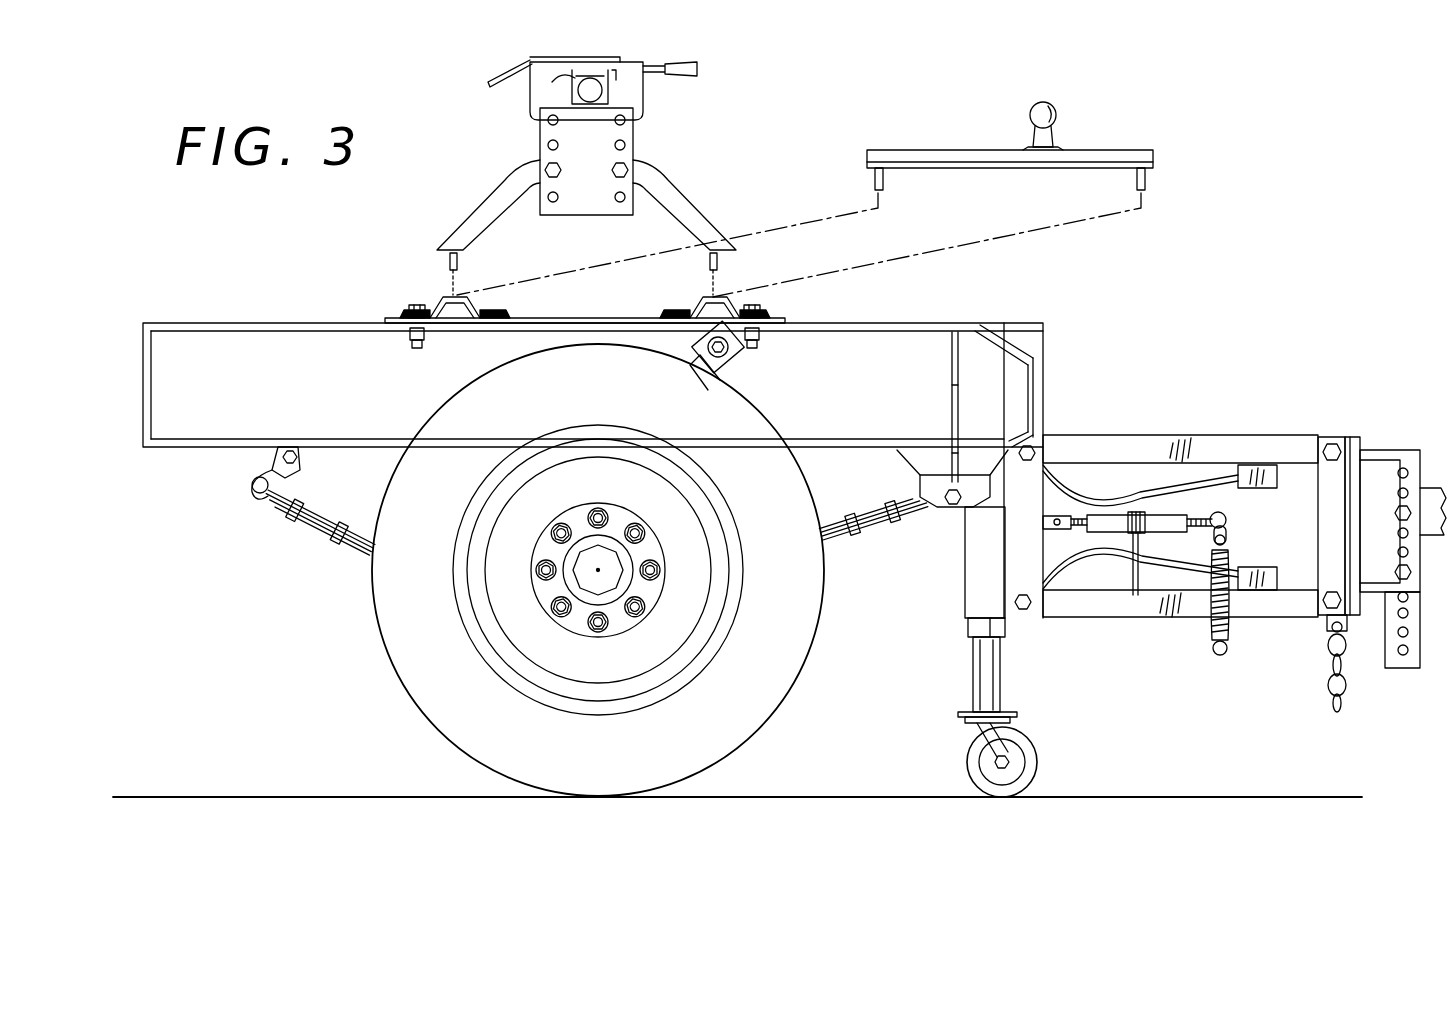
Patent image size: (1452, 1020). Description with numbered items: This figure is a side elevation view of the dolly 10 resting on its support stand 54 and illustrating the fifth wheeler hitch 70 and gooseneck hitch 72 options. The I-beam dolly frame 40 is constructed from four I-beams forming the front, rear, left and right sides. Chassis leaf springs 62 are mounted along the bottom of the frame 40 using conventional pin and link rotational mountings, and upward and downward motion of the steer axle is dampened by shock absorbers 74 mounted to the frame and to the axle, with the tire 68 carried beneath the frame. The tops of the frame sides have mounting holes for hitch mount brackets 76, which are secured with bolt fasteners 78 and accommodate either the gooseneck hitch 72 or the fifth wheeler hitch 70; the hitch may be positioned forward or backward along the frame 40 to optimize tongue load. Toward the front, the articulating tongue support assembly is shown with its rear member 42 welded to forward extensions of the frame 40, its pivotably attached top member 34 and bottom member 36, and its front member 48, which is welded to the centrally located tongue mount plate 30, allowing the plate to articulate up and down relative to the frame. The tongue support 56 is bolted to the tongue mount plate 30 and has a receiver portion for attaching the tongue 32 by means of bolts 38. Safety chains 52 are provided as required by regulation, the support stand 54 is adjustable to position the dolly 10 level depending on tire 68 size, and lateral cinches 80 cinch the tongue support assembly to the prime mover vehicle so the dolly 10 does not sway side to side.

The dolly 10 is at (1098, 323).
The tongue mount plate 30 is at (1348, 442).
The tongue 32 is at (1430, 498).
The top member 34 is at (1165, 447).
The bottom member 36 is at (1102, 605).
The bolts 38 is at (1393, 570).
The I-beam dolly frame 40 is at (929, 323).
The rear member 42 is at (1017, 562).
The front member 48 is at (1330, 440).
The safety chains 52 is at (1325, 667).
The support stand 54 is at (993, 683).
The tongue support 56 is at (1360, 443).
The chassis leaf springs 62 is at (348, 540).
The tire 68 is at (780, 700).
The fifth wheeler hitch 70 is at (684, 101).
The gooseneck hitch 72 is at (1122, 150).
The shock absorbers 74 is at (735, 368).
The hitch mount brackets 76 is at (445, 300).
The bolt fasteners 78 is at (410, 306).
The lateral cinches 80 is at (1207, 625).